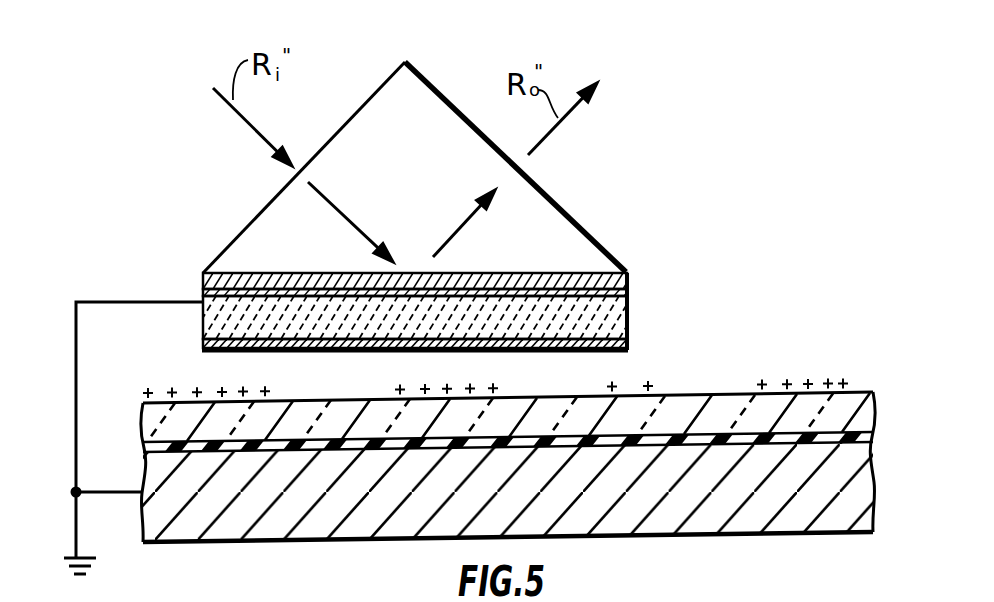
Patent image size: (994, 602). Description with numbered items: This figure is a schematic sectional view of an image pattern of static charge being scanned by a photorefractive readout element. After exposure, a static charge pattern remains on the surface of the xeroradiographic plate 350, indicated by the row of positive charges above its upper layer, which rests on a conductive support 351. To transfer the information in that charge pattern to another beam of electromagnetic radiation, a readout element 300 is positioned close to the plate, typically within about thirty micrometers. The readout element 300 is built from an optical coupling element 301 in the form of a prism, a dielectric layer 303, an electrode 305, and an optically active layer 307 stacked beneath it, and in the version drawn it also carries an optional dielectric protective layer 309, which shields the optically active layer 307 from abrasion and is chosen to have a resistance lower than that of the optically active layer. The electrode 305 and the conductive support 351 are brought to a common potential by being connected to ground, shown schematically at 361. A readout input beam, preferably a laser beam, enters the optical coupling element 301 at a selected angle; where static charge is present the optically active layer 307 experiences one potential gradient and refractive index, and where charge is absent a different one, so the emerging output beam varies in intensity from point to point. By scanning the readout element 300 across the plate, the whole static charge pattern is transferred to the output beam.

The readout element 300 is at (594, 180).
The optical coupling element 301 is at (613, 247).
The dielectric layer 303 is at (629, 274).
The electrode 305 is at (630, 293).
The optically active layer 307 is at (203, 322).
The dielectric protective layer 309 is at (630, 341).
The ground connection 361 is at (103, 302).
The xeroradiographic plate 350 is at (885, 385).
The conductive support 351 is at (295, 532).